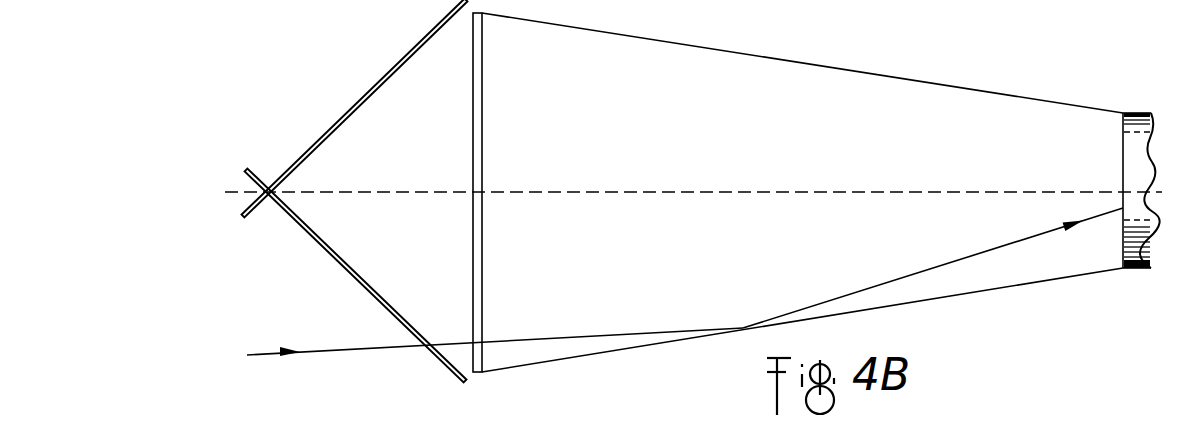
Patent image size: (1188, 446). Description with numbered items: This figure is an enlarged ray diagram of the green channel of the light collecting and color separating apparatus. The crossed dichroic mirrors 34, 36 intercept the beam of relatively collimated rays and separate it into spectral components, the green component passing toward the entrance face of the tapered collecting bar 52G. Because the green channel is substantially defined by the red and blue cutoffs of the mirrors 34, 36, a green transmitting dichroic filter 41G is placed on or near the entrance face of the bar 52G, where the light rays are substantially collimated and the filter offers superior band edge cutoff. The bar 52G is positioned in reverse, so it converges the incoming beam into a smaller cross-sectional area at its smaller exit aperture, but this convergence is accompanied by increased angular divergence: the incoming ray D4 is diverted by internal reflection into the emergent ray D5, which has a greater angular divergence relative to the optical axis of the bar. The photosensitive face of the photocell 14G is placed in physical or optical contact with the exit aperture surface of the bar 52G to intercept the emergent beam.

The crossed dichroic mirror 34 is at (412, 57).
The crossed dichroic mirror 36 is at (440, 360).
The green transmitting dichroic filter 41G is at (473, 125).
The tapered collecting bar 52G is at (770, 57).
The photocell 14G is at (1137, 268).
The incoming ray D4 is at (549, 338).
The emergent ray D5 is at (945, 265).